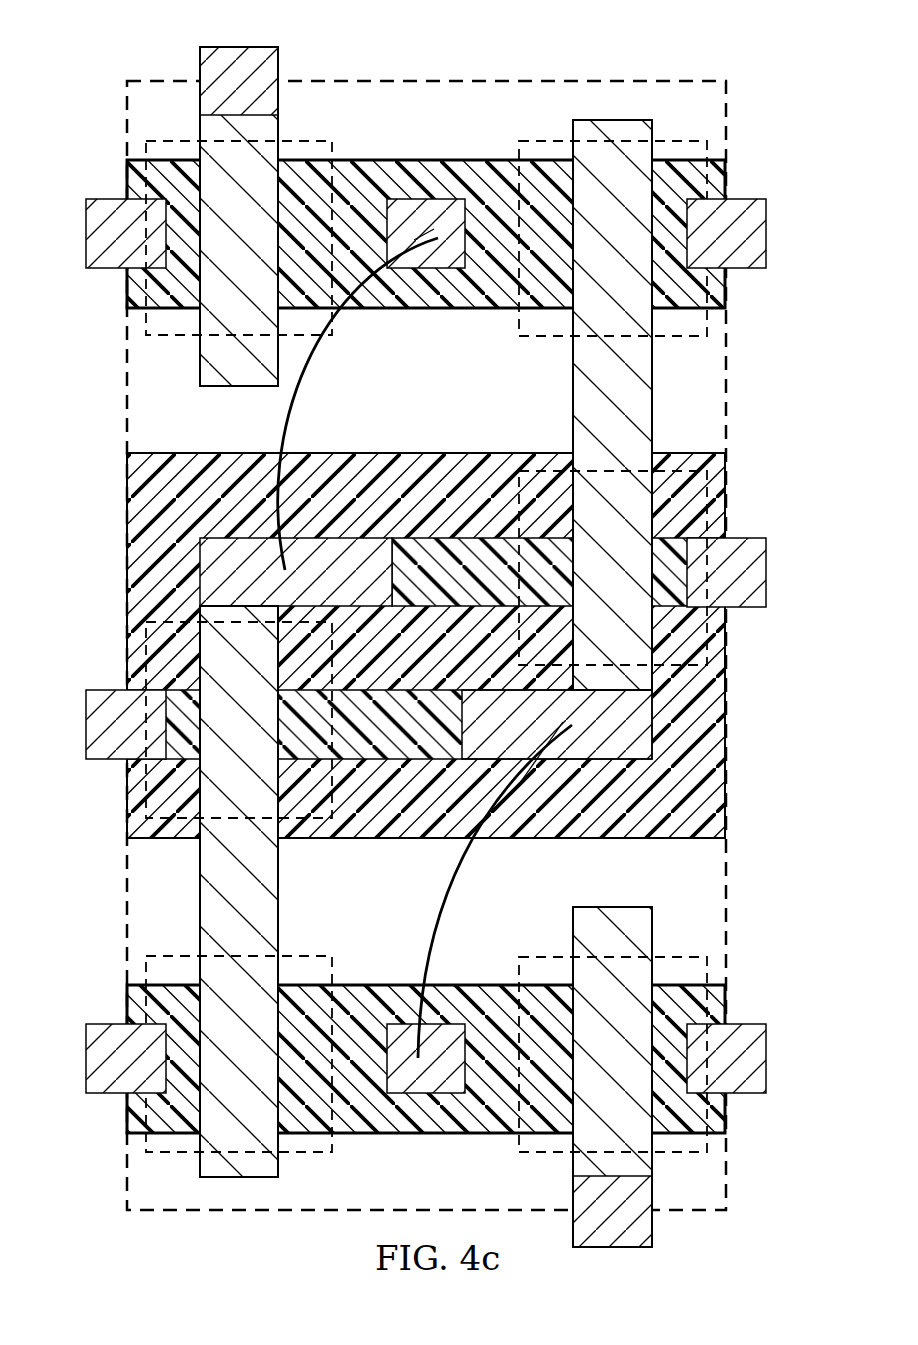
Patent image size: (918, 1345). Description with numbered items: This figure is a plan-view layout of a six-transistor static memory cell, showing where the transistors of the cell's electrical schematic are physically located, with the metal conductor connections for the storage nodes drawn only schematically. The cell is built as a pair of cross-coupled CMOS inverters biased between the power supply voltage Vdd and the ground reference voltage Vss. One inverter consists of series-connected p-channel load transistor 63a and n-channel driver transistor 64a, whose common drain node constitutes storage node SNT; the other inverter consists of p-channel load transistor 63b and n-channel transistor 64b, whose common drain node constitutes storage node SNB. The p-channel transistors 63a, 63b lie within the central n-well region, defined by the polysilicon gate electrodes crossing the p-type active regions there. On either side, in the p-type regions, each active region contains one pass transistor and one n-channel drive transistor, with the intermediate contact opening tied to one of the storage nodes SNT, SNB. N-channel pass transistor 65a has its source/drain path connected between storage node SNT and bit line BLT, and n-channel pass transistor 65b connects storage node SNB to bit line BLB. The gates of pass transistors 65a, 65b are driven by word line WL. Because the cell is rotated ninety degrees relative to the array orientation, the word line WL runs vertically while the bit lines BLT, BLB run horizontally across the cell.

The p-channel load transistor 63a is at (557, 468).
The p-channel load transistor 63b is at (310, 819).
The n-channel driver transistor 64a is at (672, 141).
The n-channel transistor 64b is at (297, 1152).
The n-channel pass transistor 65a is at (180, 335).
The n-channel pass transistor 65b is at (553, 1153).
The word line WL is at (429, 646).
The bit line BLT is at (99, 216).
The bit line BLB is at (757, 1077).
The ground reference voltage Vss is at (429, 651).
The power supply line voltage Vdd is at (431, 632).
The storage node SNT is at (358, 399).
The storage node SNB is at (487, 890).